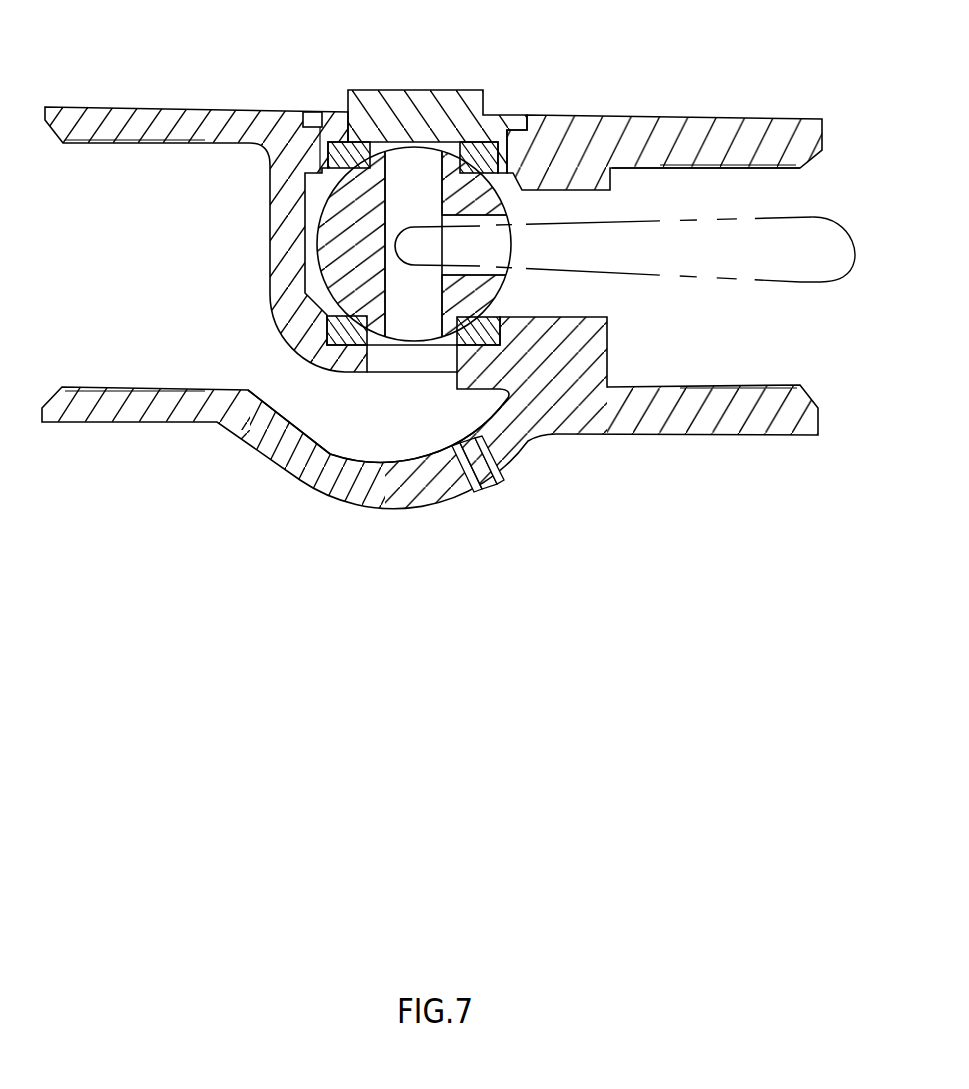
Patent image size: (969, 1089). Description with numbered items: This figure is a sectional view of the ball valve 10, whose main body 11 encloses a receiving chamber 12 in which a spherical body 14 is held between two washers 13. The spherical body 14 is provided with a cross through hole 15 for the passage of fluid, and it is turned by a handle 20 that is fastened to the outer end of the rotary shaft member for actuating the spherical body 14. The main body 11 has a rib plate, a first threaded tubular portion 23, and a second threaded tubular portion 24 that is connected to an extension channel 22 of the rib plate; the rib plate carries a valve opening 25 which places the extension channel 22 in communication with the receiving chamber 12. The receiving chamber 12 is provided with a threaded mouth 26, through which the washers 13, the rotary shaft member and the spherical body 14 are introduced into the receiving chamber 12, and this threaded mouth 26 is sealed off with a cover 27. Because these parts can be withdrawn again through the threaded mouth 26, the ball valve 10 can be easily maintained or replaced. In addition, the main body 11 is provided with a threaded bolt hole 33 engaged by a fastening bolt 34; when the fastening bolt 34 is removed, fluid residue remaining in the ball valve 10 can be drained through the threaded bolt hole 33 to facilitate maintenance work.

The ball valve 10 is at (307, 610).
The main body 11 is at (556, 386).
The receiving chamber 12 is at (515, 197).
The washers 13 is at (349, 160).
The spherical body 14 is at (330, 241).
The cross through hole 15 is at (412, 166).
The handle 20 is at (841, 221).
The extension channel 22 is at (412, 447).
The first threaded tubular portion 23 is at (758, 176).
The second threaded tubular portion 24 is at (115, 150).
The valve opening 25 is at (382, 358).
The threaded mouth 26 is at (320, 135).
The cover 27 is at (450, 104).
The threaded bolt hole 33 is at (467, 486).
The fastening bolt 34 is at (487, 474).